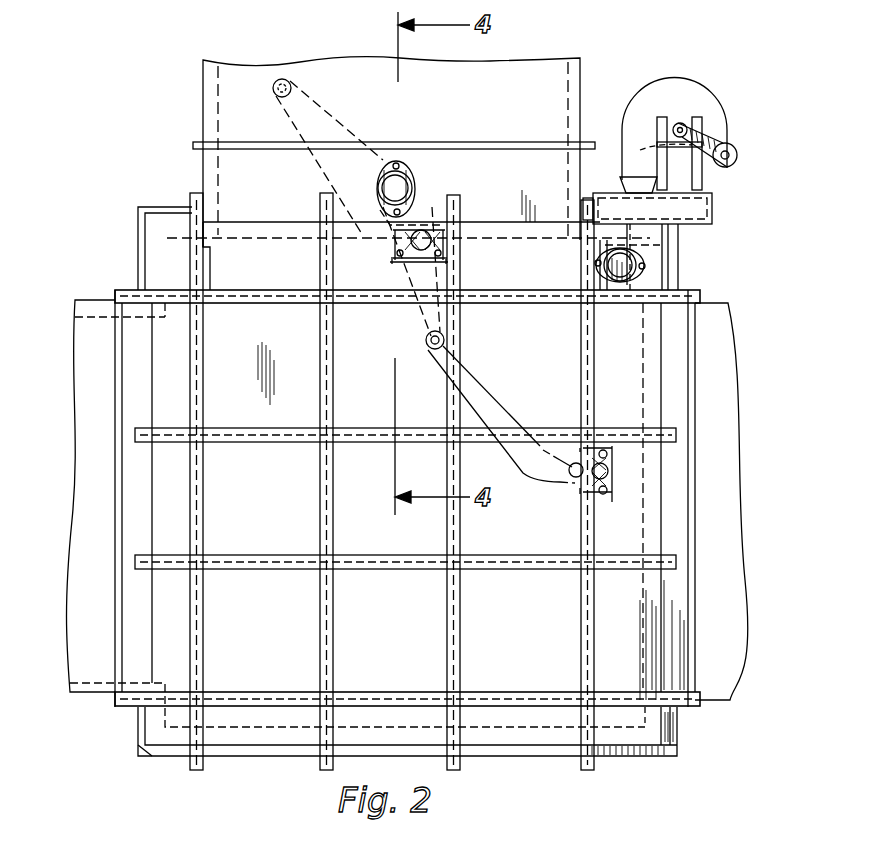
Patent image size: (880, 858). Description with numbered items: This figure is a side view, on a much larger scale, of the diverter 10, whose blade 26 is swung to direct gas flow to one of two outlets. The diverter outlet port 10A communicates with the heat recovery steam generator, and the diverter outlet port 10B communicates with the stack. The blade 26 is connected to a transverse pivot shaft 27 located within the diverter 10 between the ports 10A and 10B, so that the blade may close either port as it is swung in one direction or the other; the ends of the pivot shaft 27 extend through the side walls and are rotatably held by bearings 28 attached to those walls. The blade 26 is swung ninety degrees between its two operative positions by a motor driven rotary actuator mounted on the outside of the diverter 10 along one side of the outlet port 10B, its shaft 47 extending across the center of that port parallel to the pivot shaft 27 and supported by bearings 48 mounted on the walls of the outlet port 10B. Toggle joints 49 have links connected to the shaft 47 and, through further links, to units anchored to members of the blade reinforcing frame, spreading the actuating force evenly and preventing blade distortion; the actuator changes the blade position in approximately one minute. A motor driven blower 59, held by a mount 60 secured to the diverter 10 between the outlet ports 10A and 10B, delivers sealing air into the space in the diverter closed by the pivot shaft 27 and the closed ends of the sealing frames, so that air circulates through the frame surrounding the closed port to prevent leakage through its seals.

The diverter 10 is at (126, 268).
The diverter outlet port 10A is at (713, 303).
The diverter outlet port 10B is at (203, 168).
The blade 26 is at (487, 228).
The pivot shaft 27 is at (660, 246).
The bearings 28 is at (645, 261).
The shaft 47 is at (416, 172).
The bearings 48 is at (397, 163).
The toggle joints 49 is at (318, 95).
The motor driven blower 59 is at (705, 83).
The mount 60 is at (712, 203).